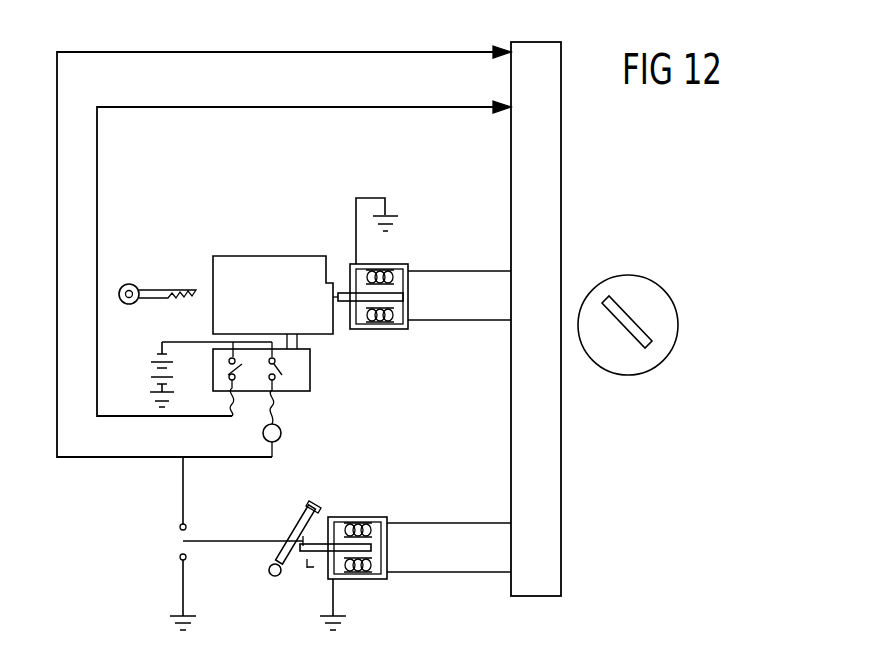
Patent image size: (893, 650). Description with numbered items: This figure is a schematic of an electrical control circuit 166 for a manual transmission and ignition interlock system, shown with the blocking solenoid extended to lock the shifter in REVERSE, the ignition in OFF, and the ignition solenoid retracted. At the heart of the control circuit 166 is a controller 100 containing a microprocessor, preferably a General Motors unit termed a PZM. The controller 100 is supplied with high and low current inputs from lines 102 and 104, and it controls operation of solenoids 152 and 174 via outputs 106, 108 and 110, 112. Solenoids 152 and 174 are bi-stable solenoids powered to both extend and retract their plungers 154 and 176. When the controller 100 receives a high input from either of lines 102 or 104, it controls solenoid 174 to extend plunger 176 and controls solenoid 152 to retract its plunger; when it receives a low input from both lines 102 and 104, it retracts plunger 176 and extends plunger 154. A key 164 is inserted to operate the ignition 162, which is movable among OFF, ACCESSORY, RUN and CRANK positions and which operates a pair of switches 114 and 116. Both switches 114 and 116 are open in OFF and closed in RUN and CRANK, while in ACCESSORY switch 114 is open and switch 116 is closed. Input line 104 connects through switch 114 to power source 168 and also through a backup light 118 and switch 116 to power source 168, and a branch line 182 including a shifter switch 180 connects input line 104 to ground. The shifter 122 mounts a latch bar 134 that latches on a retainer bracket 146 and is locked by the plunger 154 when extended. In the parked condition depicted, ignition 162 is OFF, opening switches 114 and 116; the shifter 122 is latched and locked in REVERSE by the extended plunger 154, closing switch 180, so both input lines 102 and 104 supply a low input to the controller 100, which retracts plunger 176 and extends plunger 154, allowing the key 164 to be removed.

The controller 100 is at (561, 145).
The input line 102 is at (200, 52).
The input line 104 is at (258, 107).
The output 106 is at (445, 271).
The output 108 is at (428, 320).
The output 110 is at (430, 524).
The output 112 is at (430, 575).
The switch 114 is at (232, 370).
The switch 116 is at (282, 366).
The backup light 118 is at (280, 430).
The shifter 122 is at (298, 520).
The latch bar 134 is at (320, 540).
The retainer bracket 146 is at (304, 572).
The solenoid 152 is at (372, 517).
The plunger 154 is at (326, 553).
The ignition 162 is at (257, 256).
The key 164 is at (130, 284).
The control circuit 166 is at (570, 56).
The power source 168 is at (158, 354).
The solenoid 174 is at (398, 264).
The plunger 176 is at (342, 292).
The shifter switch 180 is at (183, 541).
The branch line 182 is at (183, 500).